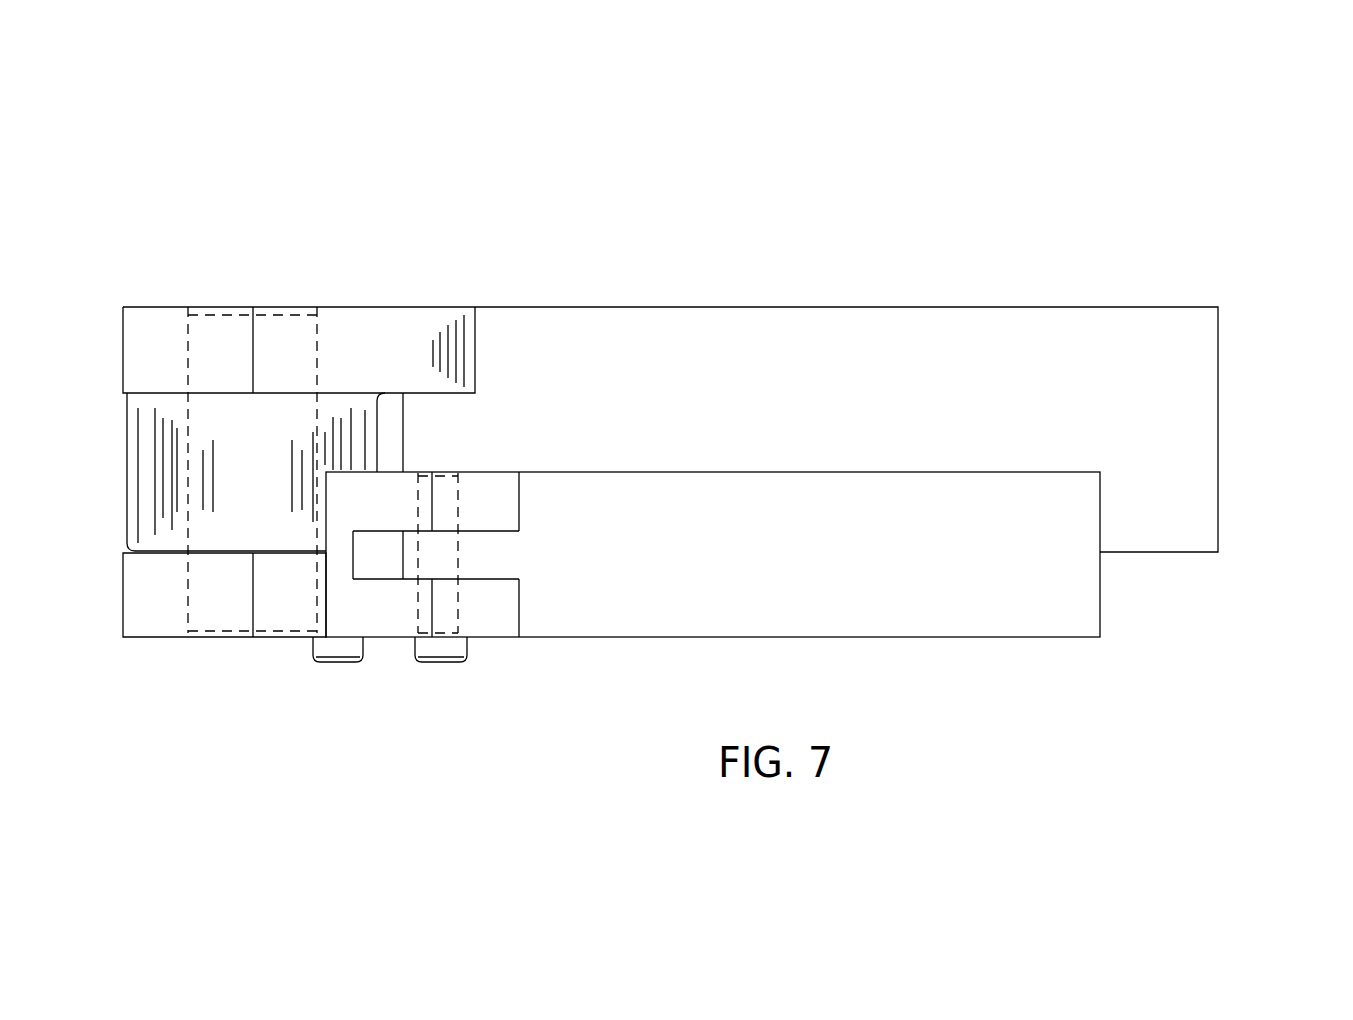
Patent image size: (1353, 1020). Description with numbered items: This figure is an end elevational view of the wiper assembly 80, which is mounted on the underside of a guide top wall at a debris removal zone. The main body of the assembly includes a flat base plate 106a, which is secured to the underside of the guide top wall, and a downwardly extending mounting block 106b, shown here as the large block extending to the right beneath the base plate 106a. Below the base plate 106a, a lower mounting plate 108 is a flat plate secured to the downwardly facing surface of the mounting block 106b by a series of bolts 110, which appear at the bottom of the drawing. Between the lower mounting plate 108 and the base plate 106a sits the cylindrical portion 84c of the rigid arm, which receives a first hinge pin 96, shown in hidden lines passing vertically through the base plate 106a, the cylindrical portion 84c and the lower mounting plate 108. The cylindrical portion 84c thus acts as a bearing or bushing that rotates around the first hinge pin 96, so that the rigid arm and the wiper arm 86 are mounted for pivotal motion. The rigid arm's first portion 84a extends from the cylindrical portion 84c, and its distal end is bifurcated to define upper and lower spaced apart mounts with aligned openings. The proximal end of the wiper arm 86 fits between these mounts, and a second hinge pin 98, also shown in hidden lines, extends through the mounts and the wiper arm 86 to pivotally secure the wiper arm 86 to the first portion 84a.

The wiper assembly 80 is at (1164, 197).
The first portion 84a is at (495, 480).
The cylindrical portion 84c is at (135, 428).
The wiper arm 86 is at (1087, 595).
The first hinge pin 96 is at (278, 332).
The second hinge pin 98 is at (455, 607).
The flat base plate 106a is at (432, 320).
The mounting block 106b is at (1210, 527).
The lower mounting plate 108 is at (135, 628).
The bolts 110 is at (458, 657).